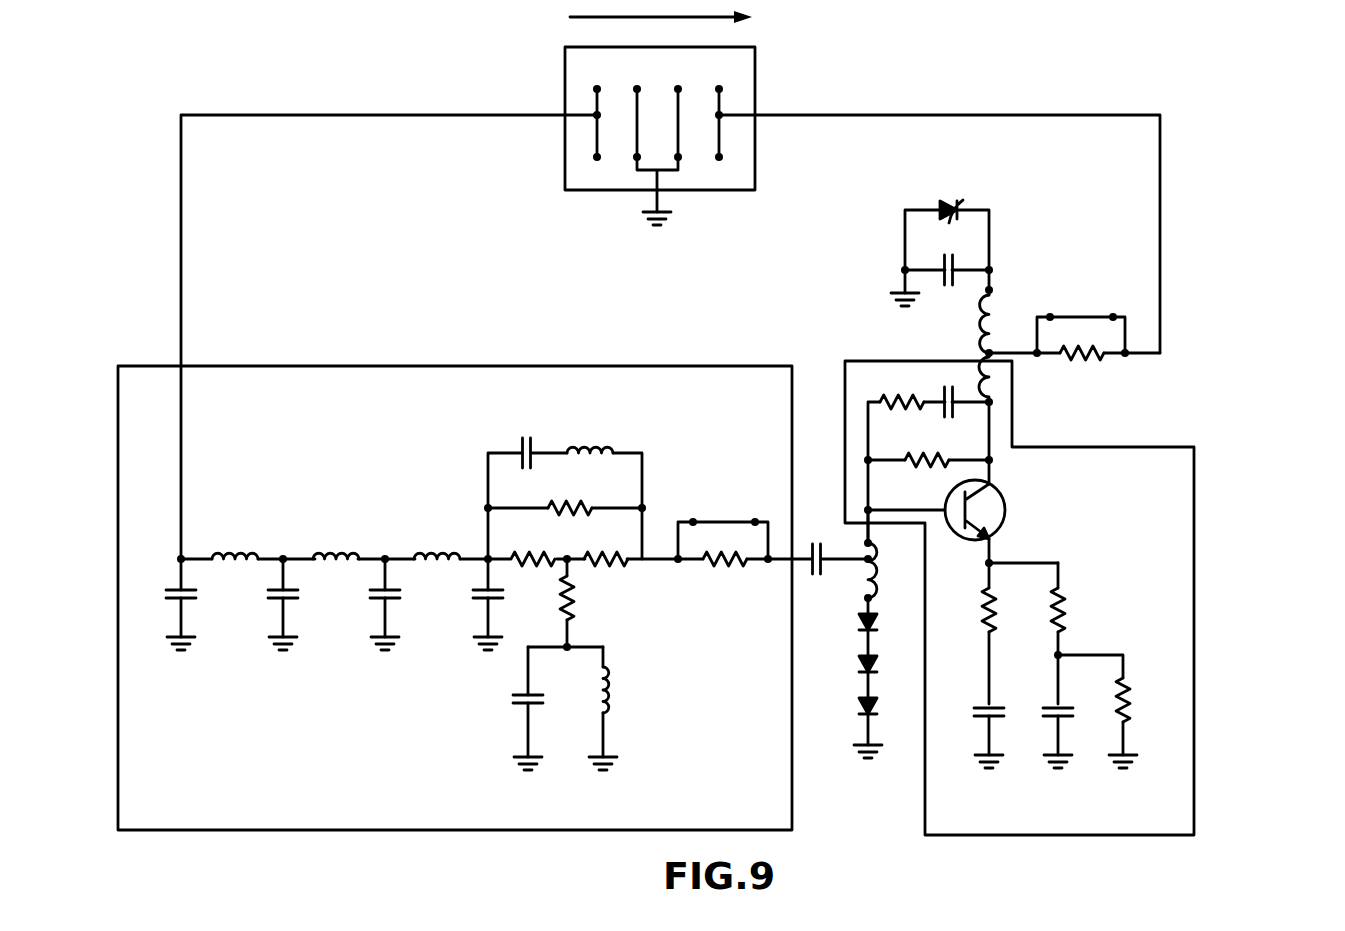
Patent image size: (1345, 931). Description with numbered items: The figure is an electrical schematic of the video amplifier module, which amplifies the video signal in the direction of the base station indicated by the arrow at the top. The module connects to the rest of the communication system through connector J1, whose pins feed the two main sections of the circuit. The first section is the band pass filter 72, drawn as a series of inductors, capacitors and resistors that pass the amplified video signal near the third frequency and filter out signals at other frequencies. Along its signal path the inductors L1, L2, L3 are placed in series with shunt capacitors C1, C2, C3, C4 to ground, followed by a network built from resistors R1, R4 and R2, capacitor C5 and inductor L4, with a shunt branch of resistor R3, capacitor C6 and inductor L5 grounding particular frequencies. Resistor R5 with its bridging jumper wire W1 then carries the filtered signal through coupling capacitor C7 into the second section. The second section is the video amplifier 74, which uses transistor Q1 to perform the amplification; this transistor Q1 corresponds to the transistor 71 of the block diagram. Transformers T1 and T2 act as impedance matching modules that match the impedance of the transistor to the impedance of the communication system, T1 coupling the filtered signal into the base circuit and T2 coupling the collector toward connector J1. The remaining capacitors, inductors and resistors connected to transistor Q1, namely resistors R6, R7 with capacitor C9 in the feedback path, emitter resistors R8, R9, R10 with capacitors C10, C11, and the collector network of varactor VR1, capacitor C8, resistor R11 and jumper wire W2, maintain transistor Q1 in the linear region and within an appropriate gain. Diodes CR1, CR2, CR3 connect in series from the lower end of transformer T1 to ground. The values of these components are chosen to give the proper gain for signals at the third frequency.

The connector J1 is at (660, 141).
The band pass filter 72 is at (308, 850).
The video amplifier 74 is at (1232, 596).
The transistor 71 is at (1020, 524).
The capacitor C1 is at (161, 604).
The capacitor C2 is at (264, 604).
The capacitor C3 is at (365, 604).
The capacitor C4 is at (468, 604).
The capacitor C5 is at (527, 439).
The capacitor C6 is at (507, 708).
The capacitor C7 is at (815, 544).
The capacitor C8 is at (950, 258).
The capacitor C9 is at (951, 390).
The capacitor C10 is at (965, 725).
The capacitor C11 is at (1036, 725).
The inductor L1 is at (235, 540).
The inductor L2 is at (336, 540).
The inductor L3 is at (437, 540).
The inductor L4 is at (590, 437).
The inductor L5 is at (617, 708).
The resistor R1 is at (533, 545).
The resistor R2 is at (570, 494).
The resistor R3 is at (589, 603).
The resistor R4 is at (606, 545).
The resistor R5 is at (725, 579).
The resistor R6 is at (902, 389).
The resistor R7 is at (927, 447).
The resistor R8 is at (967, 633).
The resistor R9 is at (1040, 633).
The resistor R10 is at (1123, 711).
The resistor R11 is at (1098, 371).
The jumper wire W1 is at (723, 526).
The jumper wire W2 is at (1081, 322).
The transformer T1 is at (878, 562).
The transformer T2 is at (989, 340).
The transistor Q1 is at (998, 521).
The varactor diode VR1 is at (945, 197).
The diode CR1 is at (838, 635).
The diode CR2 is at (838, 677).
The diode CR3 is at (841, 728).